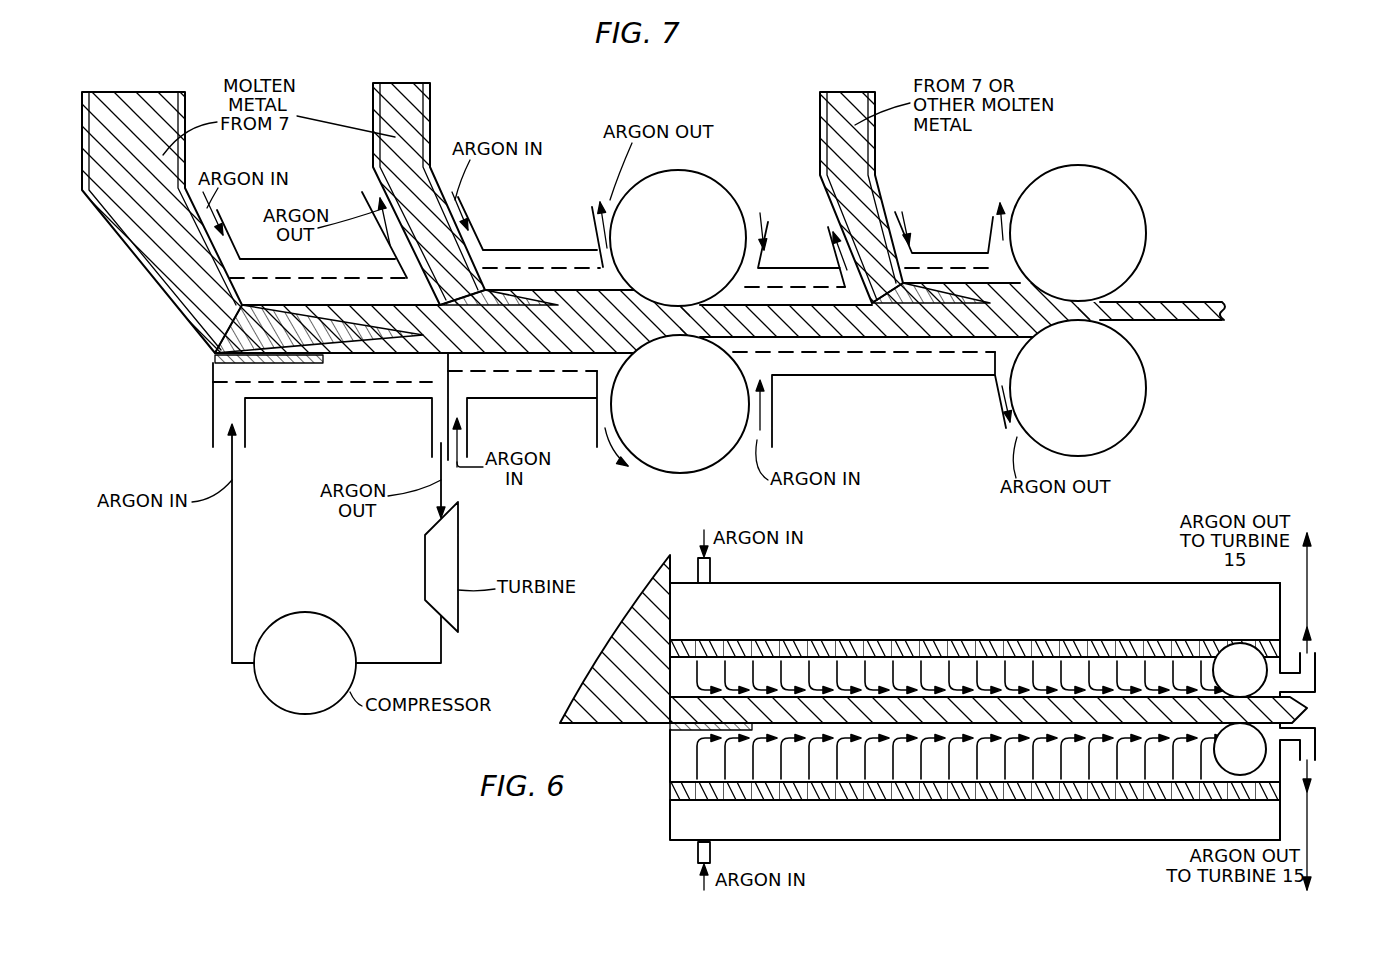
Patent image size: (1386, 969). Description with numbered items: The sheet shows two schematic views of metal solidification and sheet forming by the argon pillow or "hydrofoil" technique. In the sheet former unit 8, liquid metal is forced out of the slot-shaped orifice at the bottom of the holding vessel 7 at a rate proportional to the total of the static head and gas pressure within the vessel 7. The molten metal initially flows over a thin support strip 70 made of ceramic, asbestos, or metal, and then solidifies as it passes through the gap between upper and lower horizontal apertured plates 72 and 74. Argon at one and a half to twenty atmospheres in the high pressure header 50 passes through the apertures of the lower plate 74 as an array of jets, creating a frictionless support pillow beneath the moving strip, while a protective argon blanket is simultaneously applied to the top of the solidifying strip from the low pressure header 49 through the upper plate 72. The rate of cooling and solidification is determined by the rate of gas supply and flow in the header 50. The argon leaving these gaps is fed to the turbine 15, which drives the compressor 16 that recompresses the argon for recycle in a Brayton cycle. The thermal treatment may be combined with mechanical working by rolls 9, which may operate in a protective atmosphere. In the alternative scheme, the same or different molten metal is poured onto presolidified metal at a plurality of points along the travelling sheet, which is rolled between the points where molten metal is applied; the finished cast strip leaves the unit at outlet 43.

In FIG. 6, the holding vessel 7 is at (661, 641).
In FIG. 6, the sheet former unit 8 is at (992, 703).
In FIG. 7, the rolls 9 is at (1115, 190).
In FIG. 7, the turbine 15 is at (455, 580).
In FIG. 7, the compressor 16 is at (317, 673).
In FIG. 6, the cast strip 43 is at (1303, 708).
In FIG. 7, the low pressure header 49 is at (327, 268).
In FIG. 6, the low pressure header 49 is at (915, 615).
In FIG. 7, the high pressure header 50 is at (348, 400).
In FIG. 6, the high pressure header 50 is at (928, 825).
In FIG. 7, the support strip 70 is at (235, 372).
In FIG. 6, the support strip 70 is at (690, 729).
In FIG. 7, the upper apertured plate 72 is at (247, 278).
In FIG. 6, the upper apertured plate 72 is at (997, 640).
In FIG. 7, the lower apertured plate 74 is at (268, 384).
In FIG. 6, the lower apertured plate 74 is at (1001, 802).